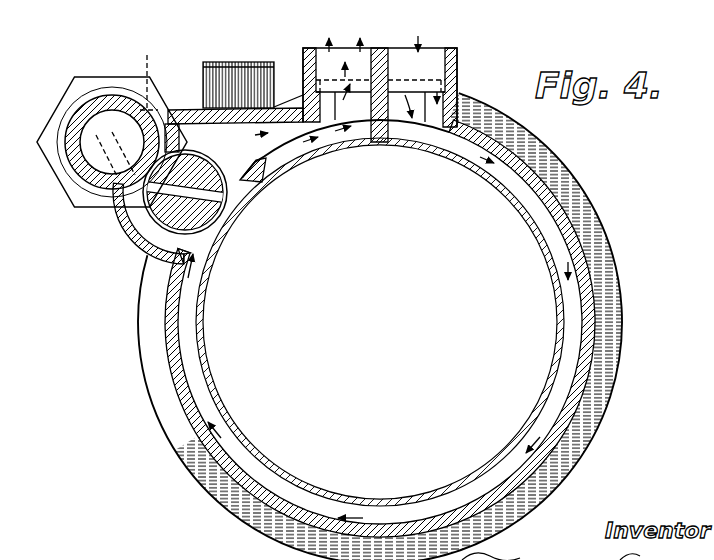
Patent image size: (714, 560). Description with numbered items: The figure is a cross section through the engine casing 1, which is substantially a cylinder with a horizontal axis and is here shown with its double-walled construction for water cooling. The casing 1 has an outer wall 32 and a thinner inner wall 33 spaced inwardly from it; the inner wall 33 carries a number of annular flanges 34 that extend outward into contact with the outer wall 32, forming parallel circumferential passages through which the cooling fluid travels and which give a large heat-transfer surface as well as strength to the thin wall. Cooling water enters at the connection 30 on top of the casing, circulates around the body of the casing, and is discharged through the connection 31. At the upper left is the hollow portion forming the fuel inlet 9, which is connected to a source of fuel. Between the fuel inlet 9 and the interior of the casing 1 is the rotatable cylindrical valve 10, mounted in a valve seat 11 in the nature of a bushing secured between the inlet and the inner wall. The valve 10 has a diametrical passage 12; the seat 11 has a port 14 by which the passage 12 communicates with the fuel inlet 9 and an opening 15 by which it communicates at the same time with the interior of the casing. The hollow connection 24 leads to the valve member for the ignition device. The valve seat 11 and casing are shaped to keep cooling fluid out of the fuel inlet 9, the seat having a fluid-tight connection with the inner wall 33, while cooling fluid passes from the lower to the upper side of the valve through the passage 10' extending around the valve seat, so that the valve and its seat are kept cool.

The casing 1 is at (183, 393).
The fuel inlet 9 is at (88, 182).
The valve 10 is at (116, 198).
The passage 10' is at (152, 74).
The valve seat 11 is at (143, 237).
The passage 12 is at (189, 190).
The port 14 is at (130, 160).
The opening 15 is at (235, 145).
The hollow connection 24 is at (238, 77).
The connection 30 is at (460, 62).
The connection 31 is at (330, 63).
The outer wall 32 is at (580, 252).
The inner wall 33 is at (533, 225).
The annular flanges 34 is at (185, 317).